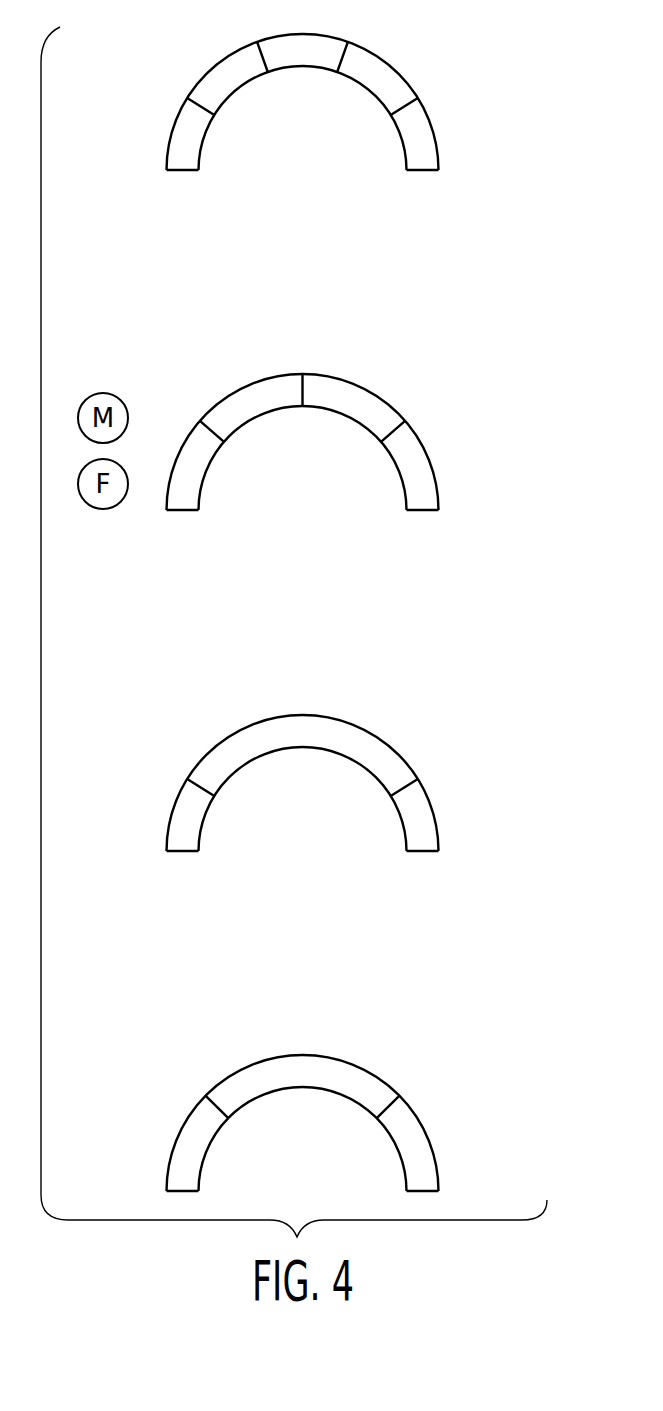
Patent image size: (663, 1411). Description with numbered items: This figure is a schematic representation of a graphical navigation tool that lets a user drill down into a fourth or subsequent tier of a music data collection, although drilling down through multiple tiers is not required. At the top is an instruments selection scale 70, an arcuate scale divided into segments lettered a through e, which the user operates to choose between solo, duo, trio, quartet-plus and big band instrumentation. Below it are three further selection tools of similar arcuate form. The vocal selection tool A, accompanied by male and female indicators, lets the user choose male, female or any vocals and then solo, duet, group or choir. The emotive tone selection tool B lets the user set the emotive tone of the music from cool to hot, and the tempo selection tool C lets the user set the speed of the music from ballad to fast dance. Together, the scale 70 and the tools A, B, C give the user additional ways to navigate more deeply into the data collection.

The instruments selection scale 70 is at (455, 81).
The vocal selection tool A is at (410, 382).
The emotive tone selection tool B is at (425, 743).
The tempo selection tool C is at (425, 1087).